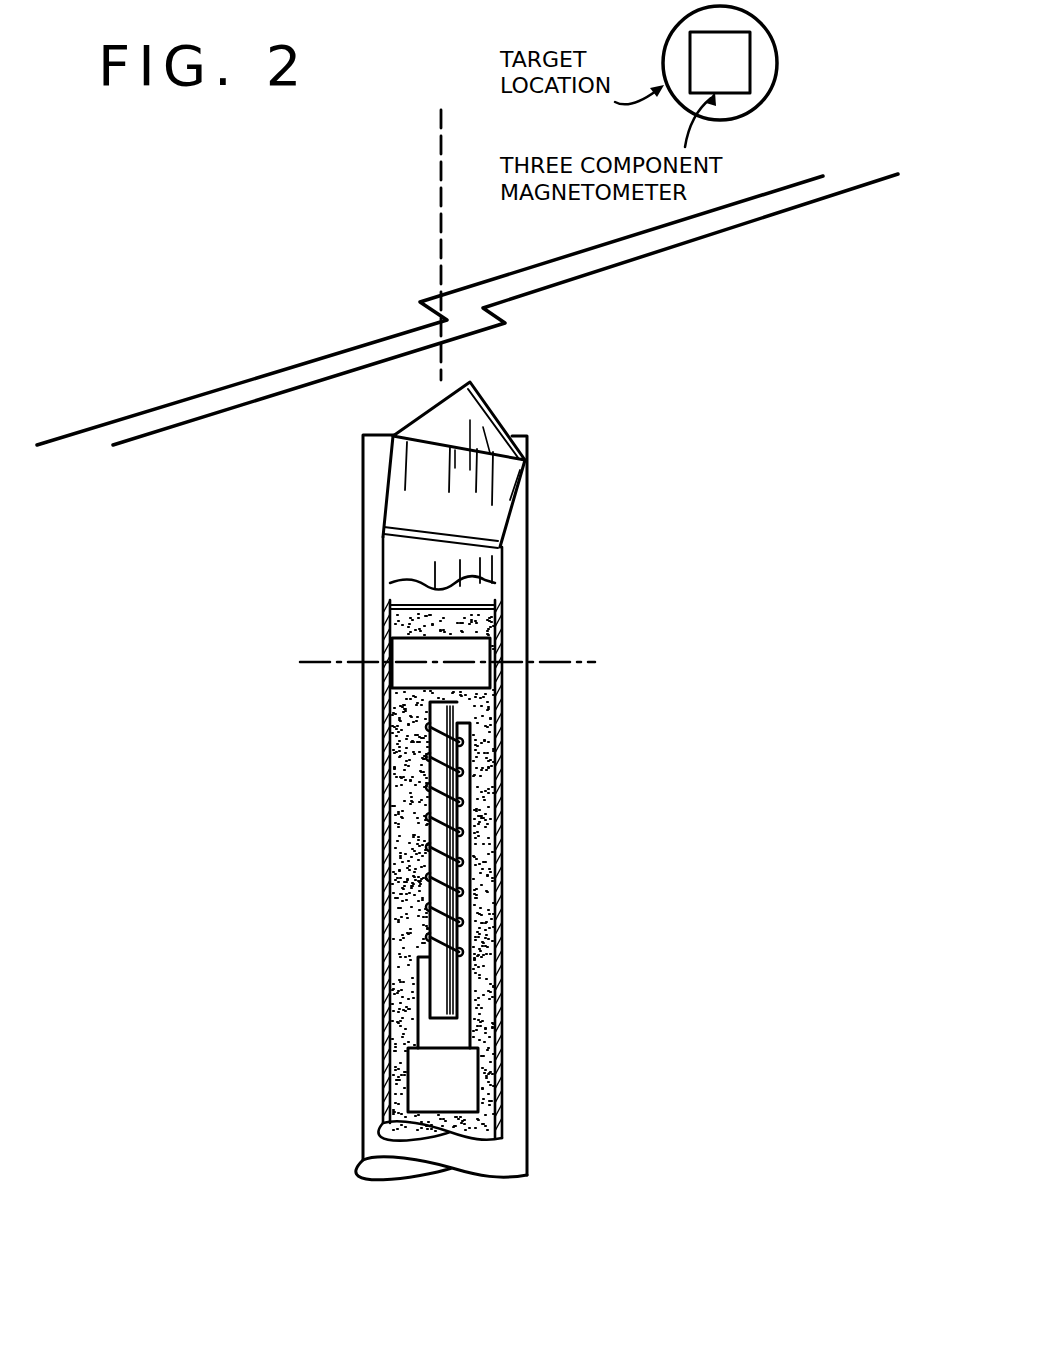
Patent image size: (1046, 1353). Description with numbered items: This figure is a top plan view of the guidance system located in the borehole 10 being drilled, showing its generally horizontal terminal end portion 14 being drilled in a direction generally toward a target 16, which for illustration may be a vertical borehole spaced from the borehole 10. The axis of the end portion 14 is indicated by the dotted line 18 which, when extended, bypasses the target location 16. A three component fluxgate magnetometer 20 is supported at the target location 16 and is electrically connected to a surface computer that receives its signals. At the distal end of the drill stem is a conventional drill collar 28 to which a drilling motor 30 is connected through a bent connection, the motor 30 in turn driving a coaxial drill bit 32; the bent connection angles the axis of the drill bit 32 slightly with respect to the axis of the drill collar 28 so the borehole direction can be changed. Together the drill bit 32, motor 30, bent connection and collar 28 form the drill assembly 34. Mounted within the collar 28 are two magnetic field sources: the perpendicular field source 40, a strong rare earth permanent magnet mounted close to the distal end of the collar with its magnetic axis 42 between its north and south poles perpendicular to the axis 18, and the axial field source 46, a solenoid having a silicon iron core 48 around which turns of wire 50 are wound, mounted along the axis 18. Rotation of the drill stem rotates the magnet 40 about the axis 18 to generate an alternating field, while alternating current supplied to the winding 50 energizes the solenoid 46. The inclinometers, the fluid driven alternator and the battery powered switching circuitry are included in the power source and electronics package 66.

The borehole 10 is at (361, 1164).
The terminal end portion 14 is at (527, 1050).
The target 16 is at (775, 78).
The axis 18 is at (440, 240).
The three component fluxgate magnetometer 20 is at (752, 53).
The drill collar 28 is at (503, 890).
The motor 30 is at (505, 518).
The drill bit 32 is at (473, 408).
The drill assembly 34 is at (499, 821).
The perpendicular field source 40 is at (473, 653).
The magnetic axis 42 is at (573, 661).
The axial field source 46 is at (442, 993).
The core 48 is at (430, 898).
The wire 50 is at (430, 813).
The power source and electronics package 66 is at (468, 1096).